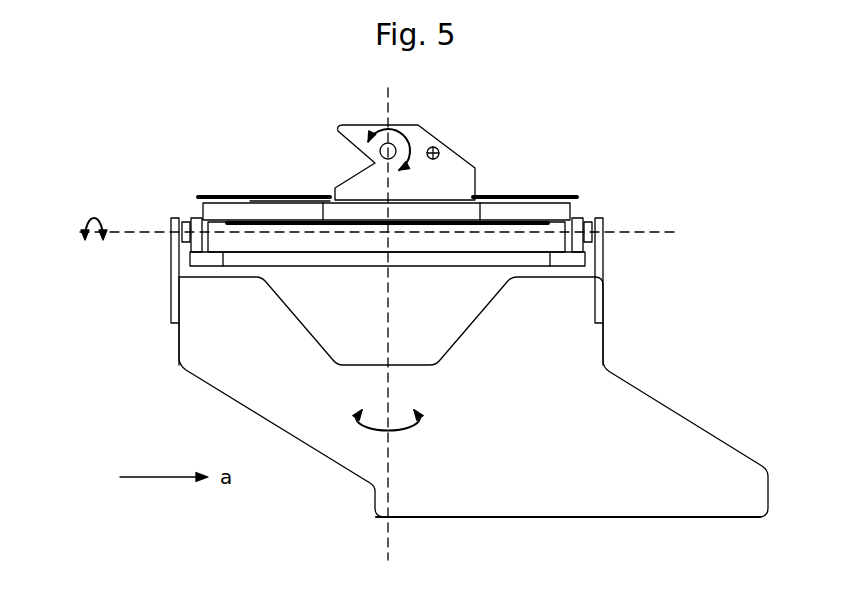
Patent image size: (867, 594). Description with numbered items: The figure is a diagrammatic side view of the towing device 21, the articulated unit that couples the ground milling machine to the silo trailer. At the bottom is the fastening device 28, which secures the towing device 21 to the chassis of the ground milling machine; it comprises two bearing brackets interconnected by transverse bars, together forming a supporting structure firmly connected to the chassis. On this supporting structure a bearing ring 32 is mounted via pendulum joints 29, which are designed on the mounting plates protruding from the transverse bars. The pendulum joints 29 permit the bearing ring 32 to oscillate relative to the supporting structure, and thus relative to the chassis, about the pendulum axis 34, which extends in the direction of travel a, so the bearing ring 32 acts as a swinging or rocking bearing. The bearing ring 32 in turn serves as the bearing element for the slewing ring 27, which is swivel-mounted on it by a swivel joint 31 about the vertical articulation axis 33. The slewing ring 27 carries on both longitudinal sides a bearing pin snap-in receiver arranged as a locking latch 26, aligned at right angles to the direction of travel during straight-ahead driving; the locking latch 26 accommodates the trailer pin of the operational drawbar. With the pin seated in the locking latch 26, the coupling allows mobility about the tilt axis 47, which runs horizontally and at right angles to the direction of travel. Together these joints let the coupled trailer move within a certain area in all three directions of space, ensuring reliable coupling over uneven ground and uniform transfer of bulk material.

The towing device 21 is at (122, 101).
The locking latch 26 is at (426, 143).
The slewing ring 27 is at (522, 213).
The fastening device 28 is at (665, 442).
The pendulum joint 29 is at (165, 232).
The swivel joint 31 is at (278, 238).
The bearing ring 32 is at (485, 257).
The vertical articulation axis 33 is at (388, 288).
The pendulum axis 34 is at (655, 230).
The tilt axis 47 is at (386, 151).